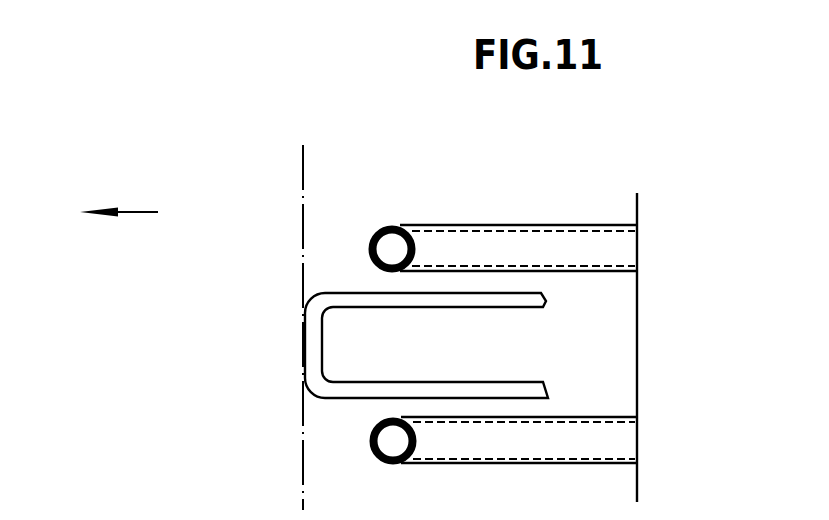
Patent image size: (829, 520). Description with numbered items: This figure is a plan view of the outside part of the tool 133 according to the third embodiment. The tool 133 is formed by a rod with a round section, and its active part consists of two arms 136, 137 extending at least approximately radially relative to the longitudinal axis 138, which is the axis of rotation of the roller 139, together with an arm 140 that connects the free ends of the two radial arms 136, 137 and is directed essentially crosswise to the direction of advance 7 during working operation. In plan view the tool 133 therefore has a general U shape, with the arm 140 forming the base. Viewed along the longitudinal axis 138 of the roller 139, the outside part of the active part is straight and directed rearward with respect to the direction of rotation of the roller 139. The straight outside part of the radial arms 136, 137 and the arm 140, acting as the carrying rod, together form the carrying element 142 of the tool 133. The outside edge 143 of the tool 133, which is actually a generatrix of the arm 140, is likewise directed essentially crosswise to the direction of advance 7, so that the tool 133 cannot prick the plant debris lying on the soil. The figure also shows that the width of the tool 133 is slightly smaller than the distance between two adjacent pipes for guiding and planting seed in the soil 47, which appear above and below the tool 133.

The direction of advance 7 is at (146, 211).
The pipes for guiding and planting seed in the soil 47 is at (436, 229).
The tool 133 is at (553, 379).
The arm 136 is at (449, 298).
The arm 137 is at (487, 390).
The longitudinal axis 138 is at (637, 351).
The roller 139 is at (296, 155).
The arm 140 is at (317, 355).
The carrying element 142 is at (296, 386).
The outside edge 143 is at (304, 327).